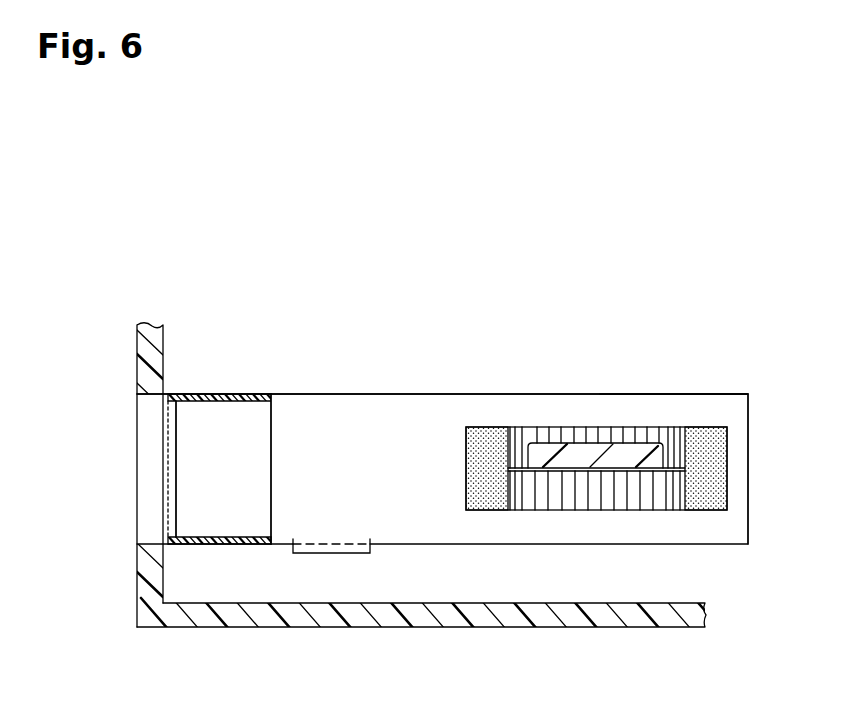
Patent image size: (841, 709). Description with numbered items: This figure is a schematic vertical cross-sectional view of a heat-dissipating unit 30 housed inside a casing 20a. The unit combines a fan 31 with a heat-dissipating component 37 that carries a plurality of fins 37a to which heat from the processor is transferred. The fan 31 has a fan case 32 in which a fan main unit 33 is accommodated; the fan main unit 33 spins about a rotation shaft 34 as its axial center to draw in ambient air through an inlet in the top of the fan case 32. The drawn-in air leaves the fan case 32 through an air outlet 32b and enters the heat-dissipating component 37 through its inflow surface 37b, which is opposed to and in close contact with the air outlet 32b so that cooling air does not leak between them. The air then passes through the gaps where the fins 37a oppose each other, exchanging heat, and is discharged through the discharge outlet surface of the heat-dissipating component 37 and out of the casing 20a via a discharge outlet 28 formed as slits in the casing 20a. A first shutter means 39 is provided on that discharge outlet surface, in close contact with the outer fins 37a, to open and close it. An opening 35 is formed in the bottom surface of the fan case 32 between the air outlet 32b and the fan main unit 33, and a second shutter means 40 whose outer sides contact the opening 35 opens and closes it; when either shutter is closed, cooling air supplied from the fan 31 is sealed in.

The casing 20a is at (566, 612).
The discharge outlet 28 is at (128, 477).
The heat-dissipating unit 30 is at (584, 275).
The fan 31 is at (528, 393).
The fan case 32 is at (700, 393).
The air outlet 32b is at (268, 503).
The fan main unit 33 is at (705, 460).
The rotation shaft 34 is at (597, 447).
The opening 35 is at (357, 553).
The heat-dissipating component 37 is at (213, 393).
The fins 37a is at (197, 432).
The inflow surface 37b is at (272, 438).
The first shutter means 39 is at (178, 507).
The second shutter means 40 is at (322, 553).